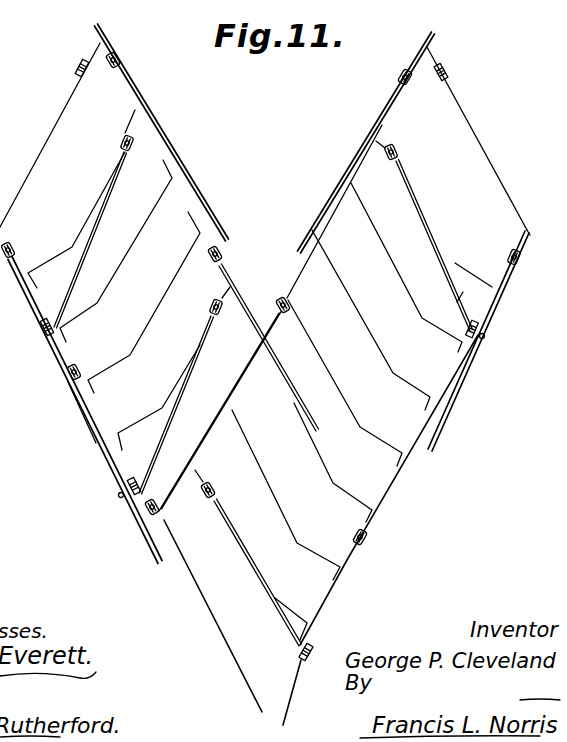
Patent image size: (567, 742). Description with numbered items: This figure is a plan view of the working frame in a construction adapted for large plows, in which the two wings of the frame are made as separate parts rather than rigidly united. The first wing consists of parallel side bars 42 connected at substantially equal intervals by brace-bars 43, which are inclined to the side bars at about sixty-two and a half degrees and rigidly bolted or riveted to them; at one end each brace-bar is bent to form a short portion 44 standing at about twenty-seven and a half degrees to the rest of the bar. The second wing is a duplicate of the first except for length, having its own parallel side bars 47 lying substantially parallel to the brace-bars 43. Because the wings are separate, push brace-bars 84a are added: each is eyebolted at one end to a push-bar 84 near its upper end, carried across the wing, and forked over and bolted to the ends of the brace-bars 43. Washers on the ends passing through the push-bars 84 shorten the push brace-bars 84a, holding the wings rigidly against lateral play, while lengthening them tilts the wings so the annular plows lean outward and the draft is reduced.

The side bars 42 is at (298, 272).
The brace-bars 43 is at (402, 277).
The bent portion of brace-bar 44 is at (348, 457).
The side bars 47 is at (186, 206).
The push-bars 84 is at (58, 361).
The push brace-bars 84a is at (476, 307).